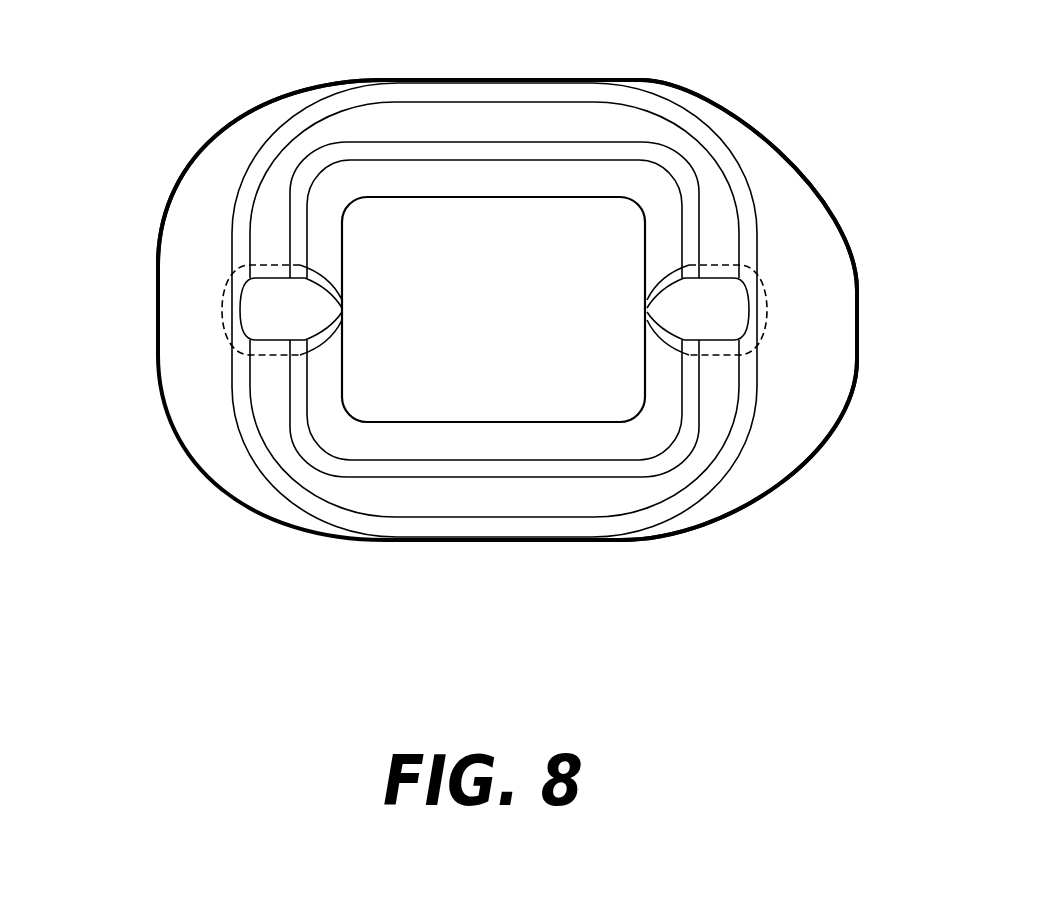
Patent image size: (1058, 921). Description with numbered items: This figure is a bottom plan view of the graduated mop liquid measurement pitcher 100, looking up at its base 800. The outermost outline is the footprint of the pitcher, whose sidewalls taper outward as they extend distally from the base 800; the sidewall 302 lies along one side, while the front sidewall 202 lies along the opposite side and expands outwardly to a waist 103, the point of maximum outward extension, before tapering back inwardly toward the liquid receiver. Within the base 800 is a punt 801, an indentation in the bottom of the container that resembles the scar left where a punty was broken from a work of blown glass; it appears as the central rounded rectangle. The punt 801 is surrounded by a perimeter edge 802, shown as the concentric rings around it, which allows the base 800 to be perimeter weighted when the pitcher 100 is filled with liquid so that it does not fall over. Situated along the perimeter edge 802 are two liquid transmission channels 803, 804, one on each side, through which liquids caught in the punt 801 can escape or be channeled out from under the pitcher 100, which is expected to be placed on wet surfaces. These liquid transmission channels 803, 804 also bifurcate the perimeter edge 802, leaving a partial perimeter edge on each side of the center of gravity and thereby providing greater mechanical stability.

The graduated mop liquid measurement pitcher 100 is at (130, 188).
The base 800 is at (505, 62).
The sidewall 302 is at (175, 275).
The waist 103 is at (858, 282).
The front sidewall 202 is at (803, 308).
The punt 801 is at (410, 378).
The perimeter edge 802 is at (455, 503).
The liquid transmission channel 803 is at (260, 302).
The liquid transmission channel 804 is at (724, 300).